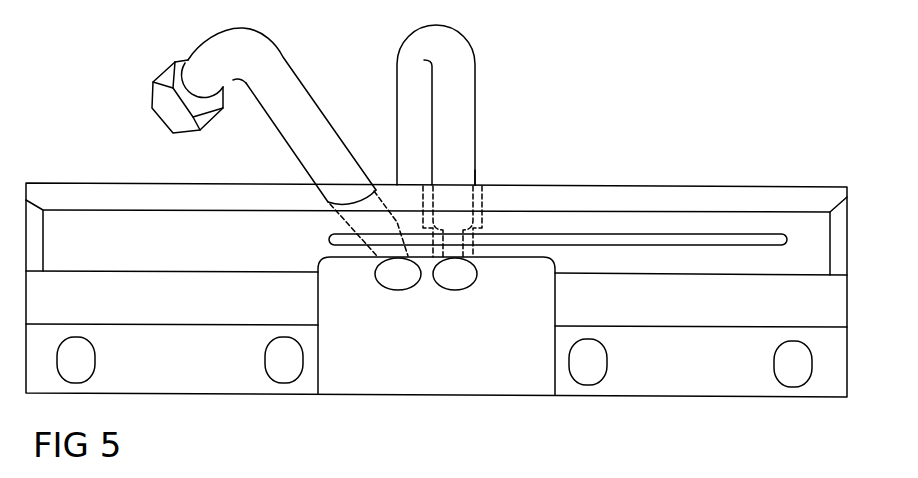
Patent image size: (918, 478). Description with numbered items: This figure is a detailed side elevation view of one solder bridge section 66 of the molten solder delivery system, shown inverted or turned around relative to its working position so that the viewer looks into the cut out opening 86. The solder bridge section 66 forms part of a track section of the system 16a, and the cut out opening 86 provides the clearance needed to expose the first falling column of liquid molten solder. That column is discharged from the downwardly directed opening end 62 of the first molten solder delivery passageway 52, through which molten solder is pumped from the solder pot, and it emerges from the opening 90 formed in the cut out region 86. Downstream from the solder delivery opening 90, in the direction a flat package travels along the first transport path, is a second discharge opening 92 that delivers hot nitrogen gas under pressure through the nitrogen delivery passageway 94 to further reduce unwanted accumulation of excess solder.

The manifold assembly 16a is at (541, 92).
The first molten solder delivery passageway 52 is at (397, 93).
The downwardly directed opening 62 is at (479, 176).
The solder bridge section 66 is at (673, 187).
The cut out opening 86 is at (488, 373).
The opening 90 is at (480, 280).
The second discharge opening 92 is at (376, 277).
The N2 delivery passageway 94 is at (292, 65).